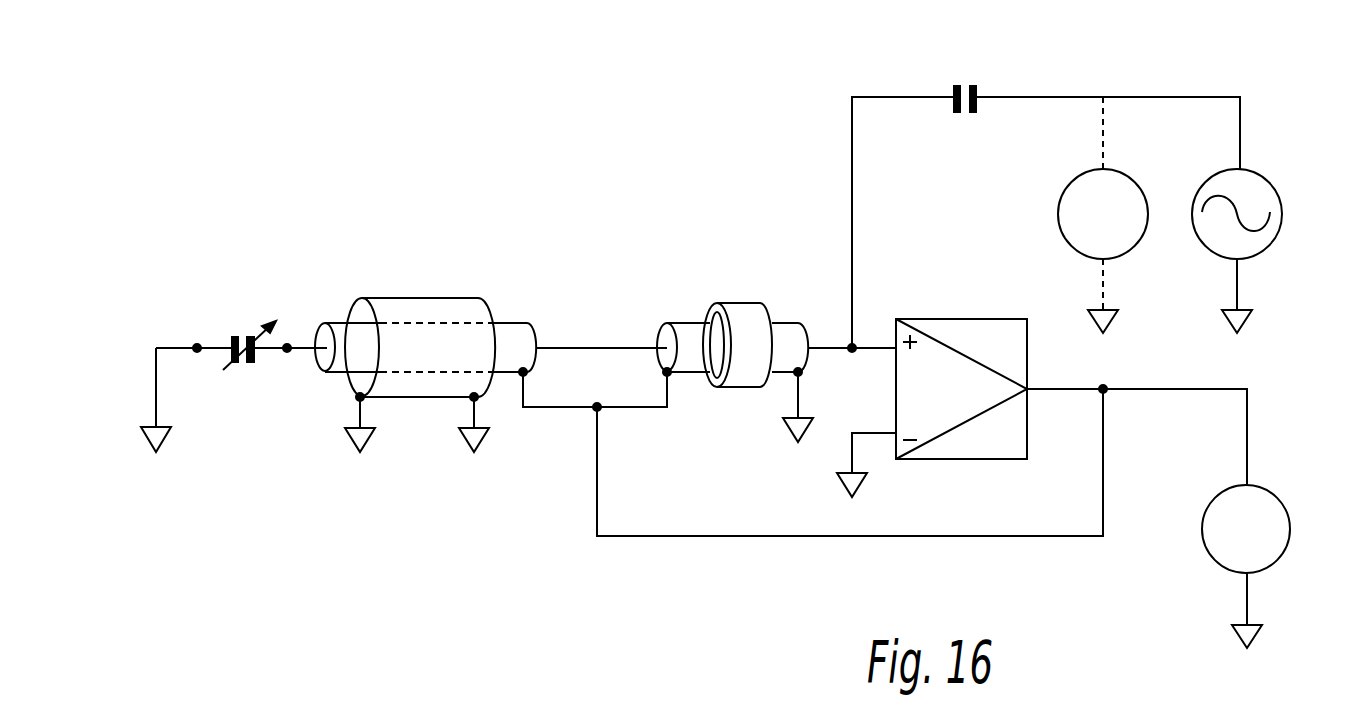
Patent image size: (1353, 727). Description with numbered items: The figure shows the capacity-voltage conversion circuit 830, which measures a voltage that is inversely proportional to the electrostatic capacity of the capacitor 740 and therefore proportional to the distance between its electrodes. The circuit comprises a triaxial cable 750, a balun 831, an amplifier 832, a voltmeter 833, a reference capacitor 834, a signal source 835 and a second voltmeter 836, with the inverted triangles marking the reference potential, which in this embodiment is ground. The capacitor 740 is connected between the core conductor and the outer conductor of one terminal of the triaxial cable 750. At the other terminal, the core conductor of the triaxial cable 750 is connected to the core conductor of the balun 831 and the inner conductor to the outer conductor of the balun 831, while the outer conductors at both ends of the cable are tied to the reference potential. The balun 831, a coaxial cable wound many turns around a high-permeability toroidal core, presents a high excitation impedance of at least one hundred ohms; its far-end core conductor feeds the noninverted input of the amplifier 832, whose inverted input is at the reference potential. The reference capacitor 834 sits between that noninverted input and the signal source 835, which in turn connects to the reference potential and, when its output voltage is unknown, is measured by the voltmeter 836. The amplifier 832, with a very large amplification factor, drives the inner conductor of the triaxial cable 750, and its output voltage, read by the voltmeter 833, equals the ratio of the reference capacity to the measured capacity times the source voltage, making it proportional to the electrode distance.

The capacity-voltage conversion circuit 830 is at (354, 107).
The capacitor 740 is at (237, 336).
The triaxial cable 750 is at (413, 298).
The balun 831 is at (738, 303).
The amplifier 832 is at (956, 319).
The voltmeter 833 is at (1257, 487).
The reference capacitor 834 is at (957, 85).
The signal source 835 is at (1267, 180).
The voltmeter 836 is at (1135, 177).